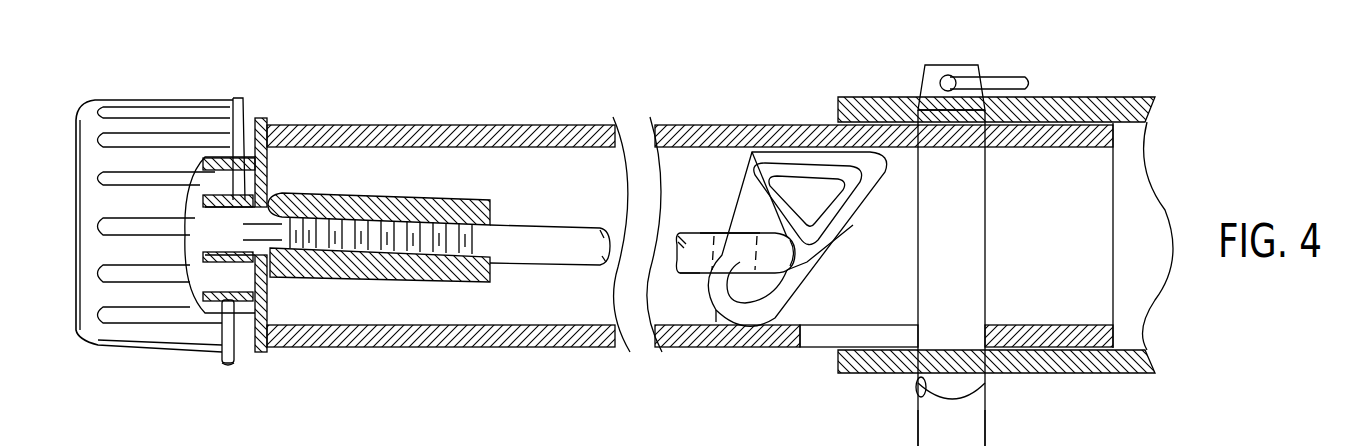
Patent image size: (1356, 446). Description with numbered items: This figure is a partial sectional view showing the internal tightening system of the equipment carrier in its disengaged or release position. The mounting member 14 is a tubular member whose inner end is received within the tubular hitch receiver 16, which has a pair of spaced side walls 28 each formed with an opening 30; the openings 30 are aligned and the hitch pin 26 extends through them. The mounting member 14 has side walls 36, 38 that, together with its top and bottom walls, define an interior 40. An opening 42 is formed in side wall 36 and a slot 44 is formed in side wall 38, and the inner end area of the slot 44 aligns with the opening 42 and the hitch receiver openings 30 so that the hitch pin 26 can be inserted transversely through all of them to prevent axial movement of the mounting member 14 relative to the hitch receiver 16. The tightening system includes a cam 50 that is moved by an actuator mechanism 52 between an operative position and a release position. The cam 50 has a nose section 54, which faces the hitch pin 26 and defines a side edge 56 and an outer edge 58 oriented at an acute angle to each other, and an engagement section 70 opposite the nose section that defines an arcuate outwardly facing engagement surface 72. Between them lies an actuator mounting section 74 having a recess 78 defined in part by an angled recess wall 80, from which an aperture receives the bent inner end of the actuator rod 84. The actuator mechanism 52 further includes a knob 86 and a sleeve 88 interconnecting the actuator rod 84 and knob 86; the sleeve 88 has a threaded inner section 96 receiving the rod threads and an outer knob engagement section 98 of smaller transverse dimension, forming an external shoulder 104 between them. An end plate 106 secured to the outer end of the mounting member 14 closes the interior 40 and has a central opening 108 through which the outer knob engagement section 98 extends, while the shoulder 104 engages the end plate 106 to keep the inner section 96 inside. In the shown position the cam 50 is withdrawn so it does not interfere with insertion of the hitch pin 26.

The mounting member 14 is at (517, 122).
The hitch receiver 16 is at (1152, 95).
The hitch pin 26 is at (987, 420).
The side walls 28 is at (1070, 97).
The openings 30 is at (922, 100).
The side wall 36 is at (567, 124).
The side wall 38 is at (548, 348).
The interior 40 is at (703, 177).
The opening 42 is at (918, 133).
The slot 44 is at (840, 337).
The cam 50 is at (792, 310).
The actuator mechanism 52 is at (477, 122).
The nose section 54 is at (887, 162).
The side edge 56 is at (760, 148).
The outer edge 58 is at (853, 225).
The engagement section 70 is at (700, 300).
The engagement surface 72 is at (708, 340).
The actuator mounting section 74 is at (700, 223).
The recess 78 is at (710, 218).
The recess wall 80 is at (722, 228).
The actuator rod 84 is at (527, 268).
The knob 86 is at (148, 92).
The sleeve 88 is at (336, 281).
The threaded inner section 96 is at (390, 195).
The outer knob engagement section 98 is at (215, 245).
The external shoulder 104 is at (240, 262).
The end plate 106 is at (250, 355).
The central opening 108 is at (255, 278).